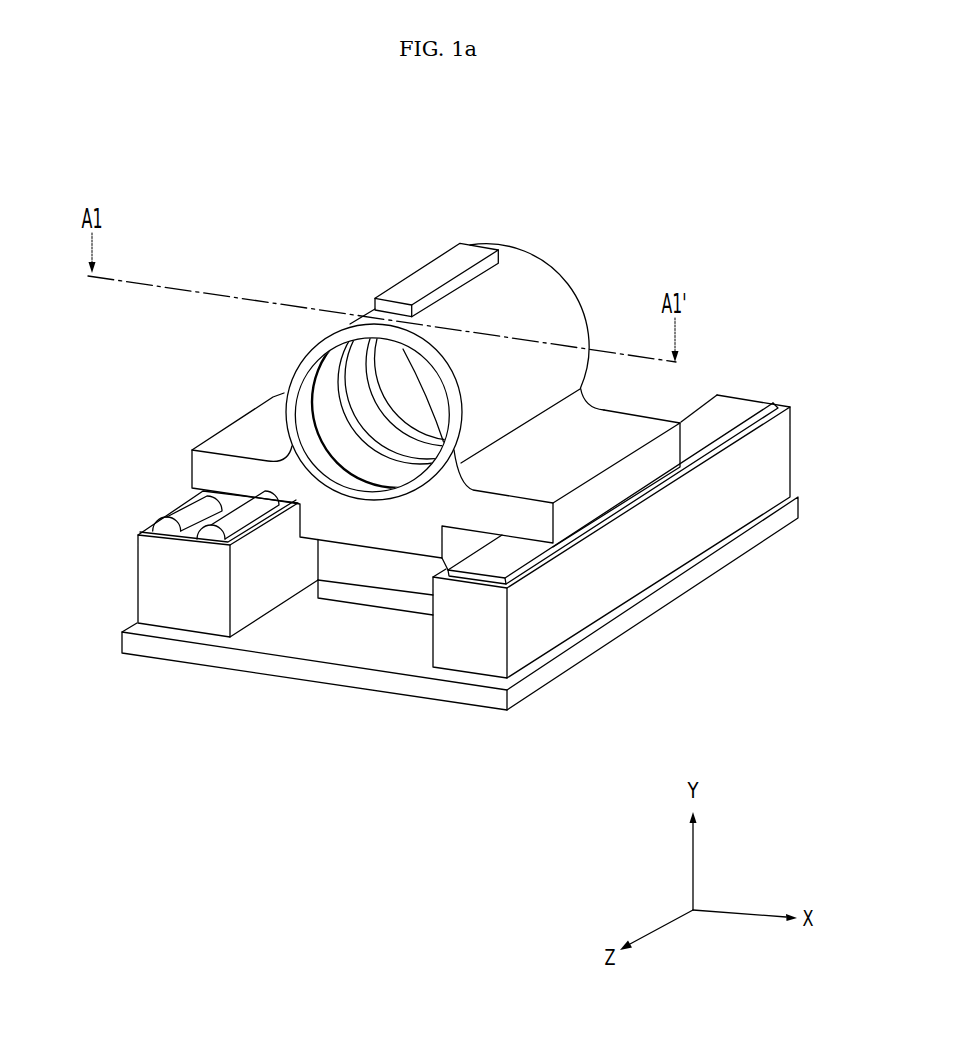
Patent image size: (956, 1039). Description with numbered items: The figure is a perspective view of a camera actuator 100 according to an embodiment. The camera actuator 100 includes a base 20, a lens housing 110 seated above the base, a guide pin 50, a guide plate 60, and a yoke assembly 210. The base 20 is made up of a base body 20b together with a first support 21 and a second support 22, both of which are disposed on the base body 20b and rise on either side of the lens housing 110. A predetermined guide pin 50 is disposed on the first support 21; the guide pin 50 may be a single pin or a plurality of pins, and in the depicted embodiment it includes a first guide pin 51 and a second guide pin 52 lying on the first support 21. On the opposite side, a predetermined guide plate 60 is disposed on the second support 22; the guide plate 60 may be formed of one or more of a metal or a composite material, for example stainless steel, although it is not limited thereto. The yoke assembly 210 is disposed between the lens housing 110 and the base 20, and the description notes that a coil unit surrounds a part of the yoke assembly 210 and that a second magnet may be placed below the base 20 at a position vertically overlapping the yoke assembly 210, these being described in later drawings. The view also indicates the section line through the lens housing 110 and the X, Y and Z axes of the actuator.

The camera actuator 100 is at (94, 112).
The lens housing 110 is at (519, 250).
The base 20 is at (458, 762).
The base body 20b is at (327, 672).
The first support 21 is at (188, 612).
The second support 22 is at (460, 655).
The guide pin 50 is at (88, 483).
The first guide pin 51 is at (153, 516).
The second guide pin 52 is at (203, 491).
The guide plate 60 is at (508, 553).
The yoke assembly 210 is at (410, 568).